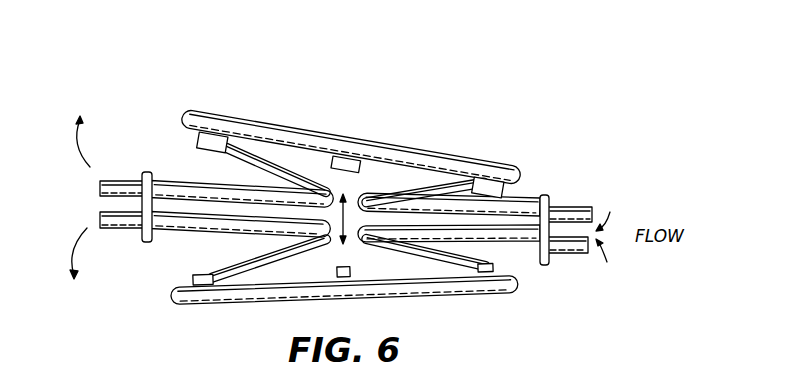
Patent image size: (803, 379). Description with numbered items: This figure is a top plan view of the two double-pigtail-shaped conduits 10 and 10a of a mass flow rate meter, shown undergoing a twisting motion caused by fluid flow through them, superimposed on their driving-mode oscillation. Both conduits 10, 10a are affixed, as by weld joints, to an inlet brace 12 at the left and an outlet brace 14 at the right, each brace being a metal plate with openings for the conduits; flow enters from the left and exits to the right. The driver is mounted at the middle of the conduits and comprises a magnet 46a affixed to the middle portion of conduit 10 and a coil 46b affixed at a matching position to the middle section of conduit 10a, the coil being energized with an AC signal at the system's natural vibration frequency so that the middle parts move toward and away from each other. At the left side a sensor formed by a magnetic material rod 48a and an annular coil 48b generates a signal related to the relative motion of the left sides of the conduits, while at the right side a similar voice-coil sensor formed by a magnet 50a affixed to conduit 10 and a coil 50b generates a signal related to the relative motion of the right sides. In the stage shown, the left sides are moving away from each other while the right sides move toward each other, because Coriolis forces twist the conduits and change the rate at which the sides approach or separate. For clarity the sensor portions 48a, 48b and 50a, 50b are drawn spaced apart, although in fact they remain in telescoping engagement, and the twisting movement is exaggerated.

The conduit 10 is at (428, 295).
The conduit 10a is at (423, 159).
The inlet brace 12 is at (147, 172).
The outlet brace 14 is at (547, 193).
The magnet 46a is at (343, 278).
The coil 46b is at (348, 158).
The magnetic material rod 48a is at (207, 286).
The annular coil 48b is at (210, 138).
The magnet 50a is at (485, 274).
The coil 50b is at (503, 176).